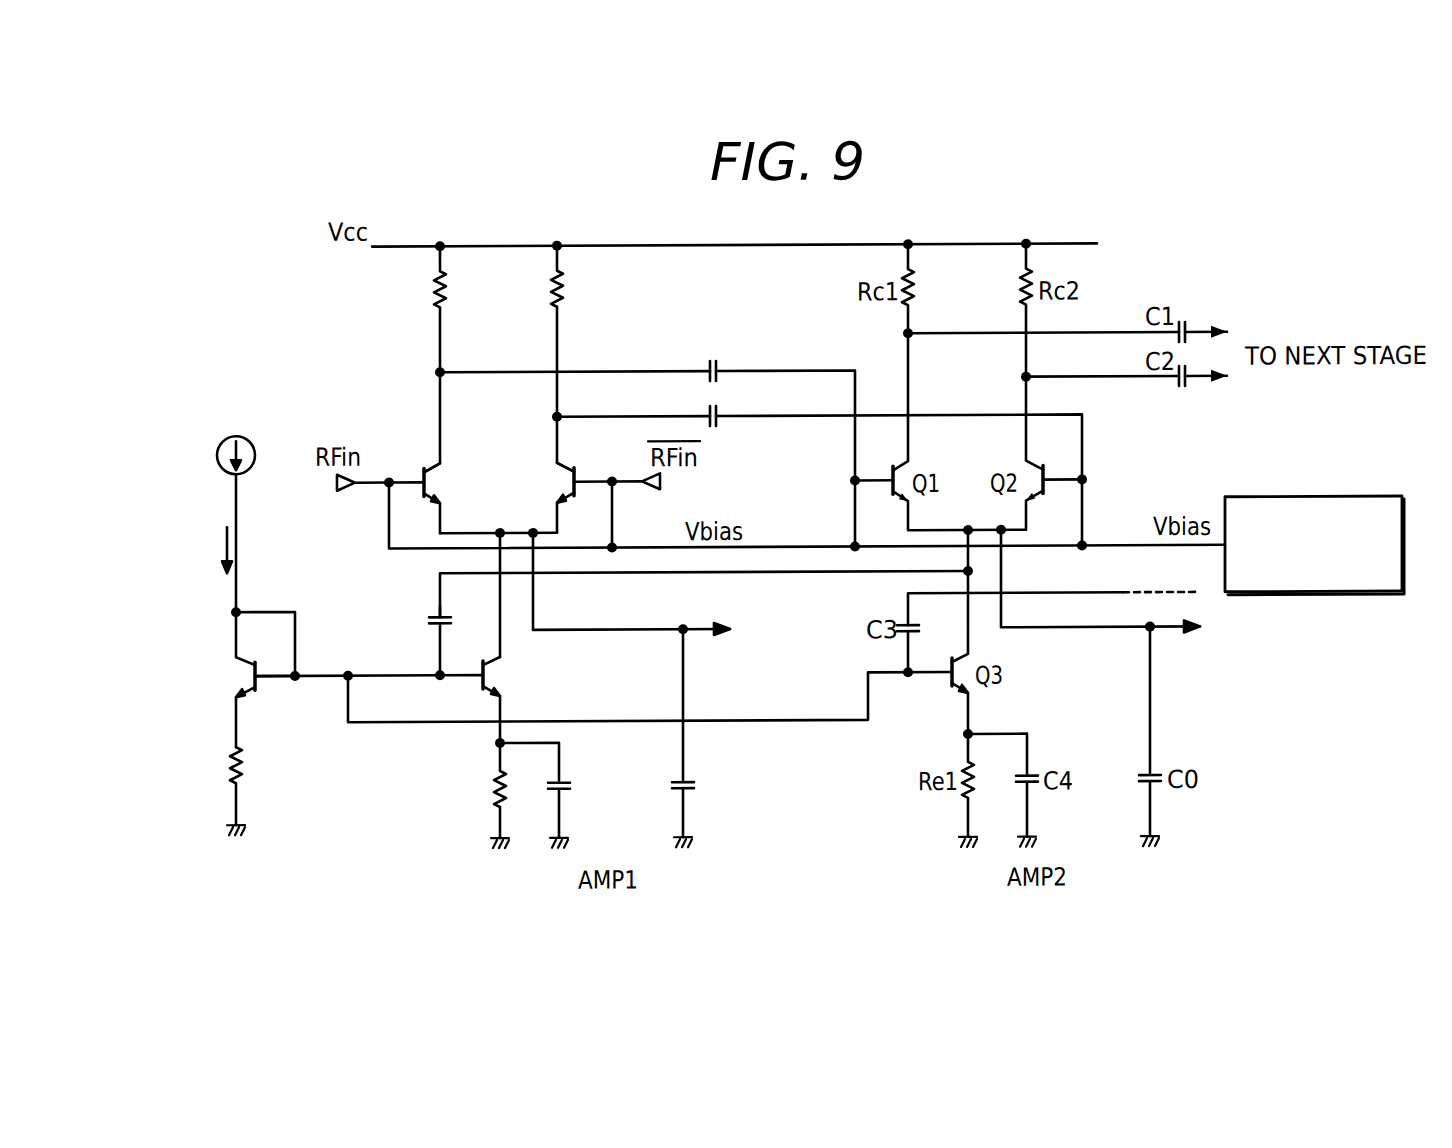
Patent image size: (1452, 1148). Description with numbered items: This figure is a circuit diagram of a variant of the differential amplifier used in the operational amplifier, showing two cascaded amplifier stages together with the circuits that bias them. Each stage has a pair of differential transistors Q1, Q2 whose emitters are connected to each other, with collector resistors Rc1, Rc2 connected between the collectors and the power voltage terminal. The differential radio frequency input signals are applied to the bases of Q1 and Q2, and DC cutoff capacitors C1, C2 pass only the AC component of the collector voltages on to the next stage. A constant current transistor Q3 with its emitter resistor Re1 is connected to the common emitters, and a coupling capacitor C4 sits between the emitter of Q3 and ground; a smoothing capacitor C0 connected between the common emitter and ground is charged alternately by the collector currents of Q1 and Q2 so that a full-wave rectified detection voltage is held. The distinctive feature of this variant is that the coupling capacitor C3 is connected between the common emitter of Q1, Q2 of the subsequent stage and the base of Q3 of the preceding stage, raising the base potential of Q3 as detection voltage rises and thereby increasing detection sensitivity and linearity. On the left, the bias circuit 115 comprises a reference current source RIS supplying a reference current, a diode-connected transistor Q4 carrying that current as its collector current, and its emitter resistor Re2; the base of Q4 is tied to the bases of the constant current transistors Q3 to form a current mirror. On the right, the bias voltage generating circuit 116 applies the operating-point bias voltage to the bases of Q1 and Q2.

The bias circuit 115 is at (231, 668).
The bias voltage generating circuit 116 is at (1352, 596).
The reference current source RIS is at (217, 457).
The transistor Q4 is at (249, 679).
The emitter resistor Re2 is at (213, 786).
The differential transistor Q1 is at (431, 498).
The differential transistor Q2 is at (568, 498).
The constant current transistor Q3 is at (487, 700).
The collector resistor Rc1 is at (418, 309).
The collector resistor Rc2 is at (582, 331).
The emitter resistor Re1 is at (479, 790).
The DC cutoff capacitor C1 is at (647, 444).
The DC cutoff capacitor C2 is at (819, 465).
The coupling capacitor C3 is at (424, 640).
The coupling capacitor C4 is at (552, 790).
The smoothing capacitor C0 is at (702, 733).